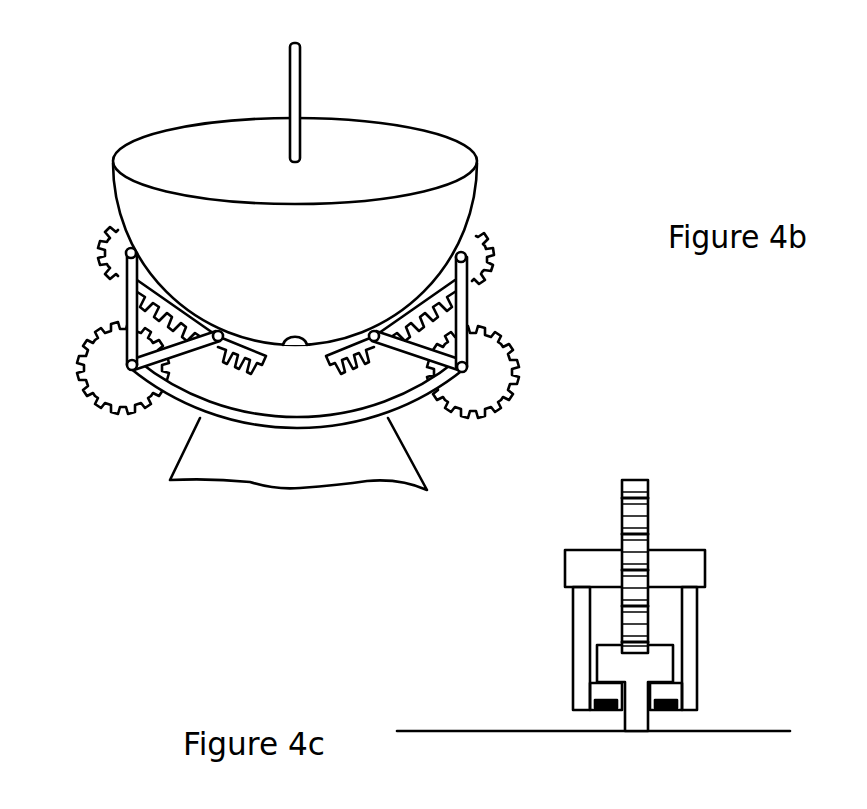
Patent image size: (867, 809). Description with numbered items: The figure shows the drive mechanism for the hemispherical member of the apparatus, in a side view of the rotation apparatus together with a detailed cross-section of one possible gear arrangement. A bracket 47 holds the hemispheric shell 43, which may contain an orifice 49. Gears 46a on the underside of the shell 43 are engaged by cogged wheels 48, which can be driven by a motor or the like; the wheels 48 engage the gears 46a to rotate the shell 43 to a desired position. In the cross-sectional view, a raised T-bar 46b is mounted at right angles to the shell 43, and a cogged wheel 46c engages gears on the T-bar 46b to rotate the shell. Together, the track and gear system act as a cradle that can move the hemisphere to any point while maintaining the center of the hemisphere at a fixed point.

In FIG. 4B, the hemispheric shell 43 is at (477, 183).
In FIG. 4C, the hemispheric shell 43 is at (442, 731).
In FIG. 4B, the gears 46a is at (70, 244).
In FIG. 4C, the raised T-bar 46b is at (613, 662).
In FIG. 4C, the cogged wheel 46c is at (622, 507).
In FIG. 4B, the bracket 47 is at (468, 310).
In FIG. 4B, the cogged wheels 48 is at (92, 332).
In FIG. 4B, the orifice 49 is at (312, 329).